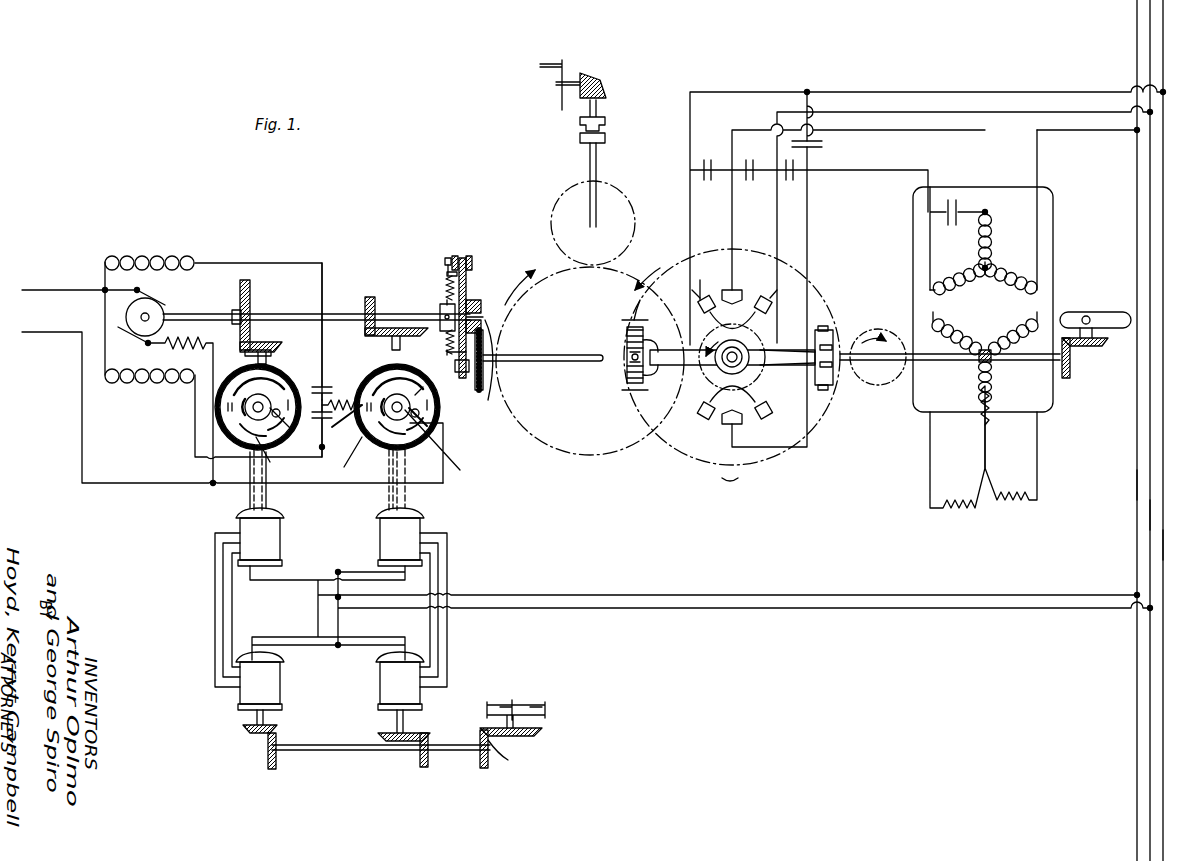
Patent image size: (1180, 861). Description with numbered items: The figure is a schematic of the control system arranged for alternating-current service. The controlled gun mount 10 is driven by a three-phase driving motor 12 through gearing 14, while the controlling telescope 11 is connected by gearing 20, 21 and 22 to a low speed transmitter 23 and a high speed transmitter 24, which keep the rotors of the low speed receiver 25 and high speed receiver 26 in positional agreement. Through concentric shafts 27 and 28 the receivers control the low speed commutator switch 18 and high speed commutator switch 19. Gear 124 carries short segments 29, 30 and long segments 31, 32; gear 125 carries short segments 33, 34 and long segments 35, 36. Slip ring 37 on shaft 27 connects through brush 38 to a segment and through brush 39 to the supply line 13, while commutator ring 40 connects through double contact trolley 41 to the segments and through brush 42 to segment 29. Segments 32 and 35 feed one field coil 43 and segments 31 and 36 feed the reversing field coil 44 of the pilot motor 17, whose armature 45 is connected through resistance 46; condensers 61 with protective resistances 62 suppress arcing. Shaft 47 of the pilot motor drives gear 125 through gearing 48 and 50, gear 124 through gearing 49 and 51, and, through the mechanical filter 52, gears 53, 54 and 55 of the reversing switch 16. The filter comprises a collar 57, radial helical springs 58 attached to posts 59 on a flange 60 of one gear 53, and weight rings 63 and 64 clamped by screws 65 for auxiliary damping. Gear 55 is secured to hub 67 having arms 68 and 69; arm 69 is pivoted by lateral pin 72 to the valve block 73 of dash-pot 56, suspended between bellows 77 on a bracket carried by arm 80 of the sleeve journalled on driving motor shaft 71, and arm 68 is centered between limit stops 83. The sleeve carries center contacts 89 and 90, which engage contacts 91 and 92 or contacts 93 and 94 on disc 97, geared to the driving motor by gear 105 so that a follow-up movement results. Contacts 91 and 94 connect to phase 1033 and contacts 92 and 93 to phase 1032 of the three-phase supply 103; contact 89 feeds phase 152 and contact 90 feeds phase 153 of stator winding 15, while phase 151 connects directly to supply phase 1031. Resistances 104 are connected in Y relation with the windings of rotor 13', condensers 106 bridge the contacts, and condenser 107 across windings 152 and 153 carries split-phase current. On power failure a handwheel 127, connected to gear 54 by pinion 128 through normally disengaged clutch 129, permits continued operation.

The gun mount 10 is at (1092, 314).
The telescope 11 is at (534, 704).
The three-phase driving motor 12 is at (1053, 228).
The supply line 13 is at (232, 386).
The three-phase rotor 13' is at (985, 368).
The gearing 14 is at (1072, 352).
The three-phase stator winding 15 is at (989, 266).
The stator winding phase 151 is at (1040, 283).
The stator winding phase 152 is at (990, 222).
The stator winding phase 153 is at (933, 290).
The reversing switch 16 is at (790, 320).
The pilot motor 17 is at (103, 285).
The low speed commutator switch 18 is at (440, 420).
The high speed commutator switch 19 is at (222, 430).
The gearing 20 is at (508, 758).
The gearing 21 is at (428, 740).
The gearing 22 is at (278, 764).
The low speed transmitter 23 is at (378, 684).
The high speed transmitter 24 is at (238, 694).
The low speed receiver 25 is at (378, 530).
The high speed receiver 26 is at (236, 526).
The low speed rotor shaft 27 is at (413, 496).
The high speed rotor shaft 28 is at (266, 496).
The short segment 29 is at (356, 424).
The short segment 30 is at (443, 407).
The long segment 31 is at (356, 455).
The long segment 32 is at (421, 382).
The short segment 33 is at (320, 384).
The short segment 34 is at (226, 412).
The long segment 35 is at (278, 378).
The long segment 36 is at (250, 442).
The slip ring 37 is at (456, 364).
The trolley or brush 38 is at (372, 378).
The trolley or brush 39 is at (414, 440).
The commutator ring 40 is at (238, 384).
The double contact trolley 41 is at (226, 398).
The brush 42 is at (248, 470).
The field coil 43 is at (165, 240).
The reversing field coil 44 is at (138, 382).
The armature 45 is at (150, 307).
The resistance 46 is at (170, 346).
The pilot motor shaft 47 is at (212, 314).
The gearing 48 is at (252, 344).
The gearing 49 is at (370, 306).
The gearing 50 is at (270, 352).
The gearing 51 is at (390, 372).
The mechanical filter 52 is at (443, 242).
The gears 53 is at (491, 404).
The gear 54 is at (580, 455).
The gear 55 is at (690, 420).
The dash-pot 56 is at (620, 340).
The collar 57 is at (440, 310).
The radial helical springs 58 is at (444, 290).
The posts 59 is at (446, 266).
The flange 60 is at (468, 282).
The condensers 61 is at (314, 423).
The protective resistances 62 is at (334, 402).
The ring weight 63 is at (457, 254).
The ring weight 64 is at (473, 257).
The screws 65 is at (443, 262).
The hub 67 is at (688, 374).
The radial arm 68 is at (780, 375).
The radial arm 69 is at (667, 348).
The driving motor shaft 71 is at (958, 365).
The lateral pin 72 is at (630, 358).
The movable valve block 73 is at (632, 369).
The metallic bellows 77 is at (632, 384).
The arm 80 is at (662, 320).
The limit stops 83 is at (832, 340).
The contact 89 is at (736, 290).
The contact 90 is at (732, 424).
The contact 91 is at (710, 294).
The contact 92 is at (764, 416).
The contact 93 is at (770, 296).
The contact 94 is at (706, 416).
The disc 97 is at (736, 464).
The three-phase supply 103 is at (1160, 66).
The supply phase 1031 is at (1137, 480).
The supply phase 1032 is at (1150, 512).
The supply phase 1033 is at (1163, 537).
The resistances 104 is at (986, 484).
The gear 105 is at (874, 387).
The condensers 106 is at (782, 197).
The condenser 107 is at (945, 230).
The gear 124 is at (446, 446).
The gear 125 is at (264, 462).
The handwheel 127 is at (558, 100).
The pinion 128 is at (634, 211).
The clutch 129 is at (605, 133).